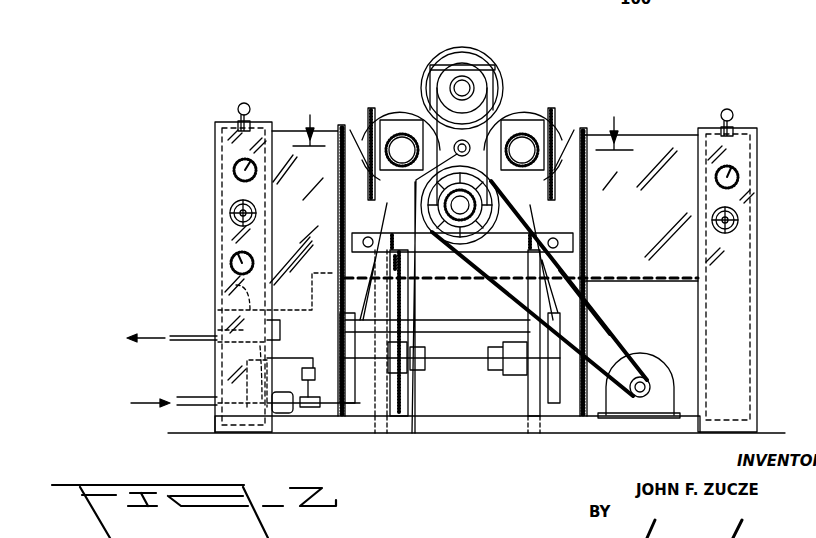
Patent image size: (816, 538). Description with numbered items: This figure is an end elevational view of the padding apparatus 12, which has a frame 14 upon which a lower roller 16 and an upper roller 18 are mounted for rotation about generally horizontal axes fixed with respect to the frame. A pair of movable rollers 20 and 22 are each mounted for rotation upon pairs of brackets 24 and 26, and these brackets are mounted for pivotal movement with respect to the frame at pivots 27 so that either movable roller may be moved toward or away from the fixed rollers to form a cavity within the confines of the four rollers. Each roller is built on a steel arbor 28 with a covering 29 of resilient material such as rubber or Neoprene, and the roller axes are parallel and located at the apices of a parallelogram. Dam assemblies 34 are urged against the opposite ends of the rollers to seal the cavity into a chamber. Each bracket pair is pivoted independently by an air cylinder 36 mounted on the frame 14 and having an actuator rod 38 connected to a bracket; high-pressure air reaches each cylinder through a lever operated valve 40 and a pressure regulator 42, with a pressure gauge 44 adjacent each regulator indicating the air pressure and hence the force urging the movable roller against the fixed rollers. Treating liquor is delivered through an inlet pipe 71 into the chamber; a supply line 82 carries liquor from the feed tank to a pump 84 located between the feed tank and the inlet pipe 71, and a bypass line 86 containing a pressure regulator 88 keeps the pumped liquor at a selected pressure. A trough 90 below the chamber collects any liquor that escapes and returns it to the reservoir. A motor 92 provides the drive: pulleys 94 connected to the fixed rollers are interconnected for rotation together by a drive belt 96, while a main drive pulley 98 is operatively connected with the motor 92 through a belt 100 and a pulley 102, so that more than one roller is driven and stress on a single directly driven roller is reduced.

The padding apparatus 12 is at (660, 133).
The frame 14 is at (450, 436).
The lower roller 16 is at (395, 200).
The upper roller 18 is at (485, 55).
The movable roller 20 is at (540, 112).
The movable roller 22 is at (388, 110).
The bracket 24 is at (577, 130).
The bracket 26 is at (352, 122).
The pivot 27 is at (573, 242).
The steel arbor 28 is at (455, 55).
The covering 29 is at (470, 48).
The dam assembly 34 is at (508, 115).
The air cylinder 36 is at (488, 368).
The actuator rod 38 is at (530, 360).
The lever operated valve 40 is at (760, 100).
The pressure regulator 42 is at (738, 218).
The pressure gauge 44 is at (740, 175).
The inlet pipe 71 is at (422, 293).
The supply line 82 is at (197, 397).
The pump 84 is at (284, 413).
The bypass line 86 is at (300, 358).
The pressure regulator 88 is at (318, 403).
The trough 90 is at (235, 287).
The motor 92 is at (655, 352).
The pulley 94 is at (428, 240).
The drive belt 96 is at (417, 120).
The main drive pulley 98 is at (490, 240).
The belt 100 is at (607, 330).
The pulley 102 is at (652, 392).